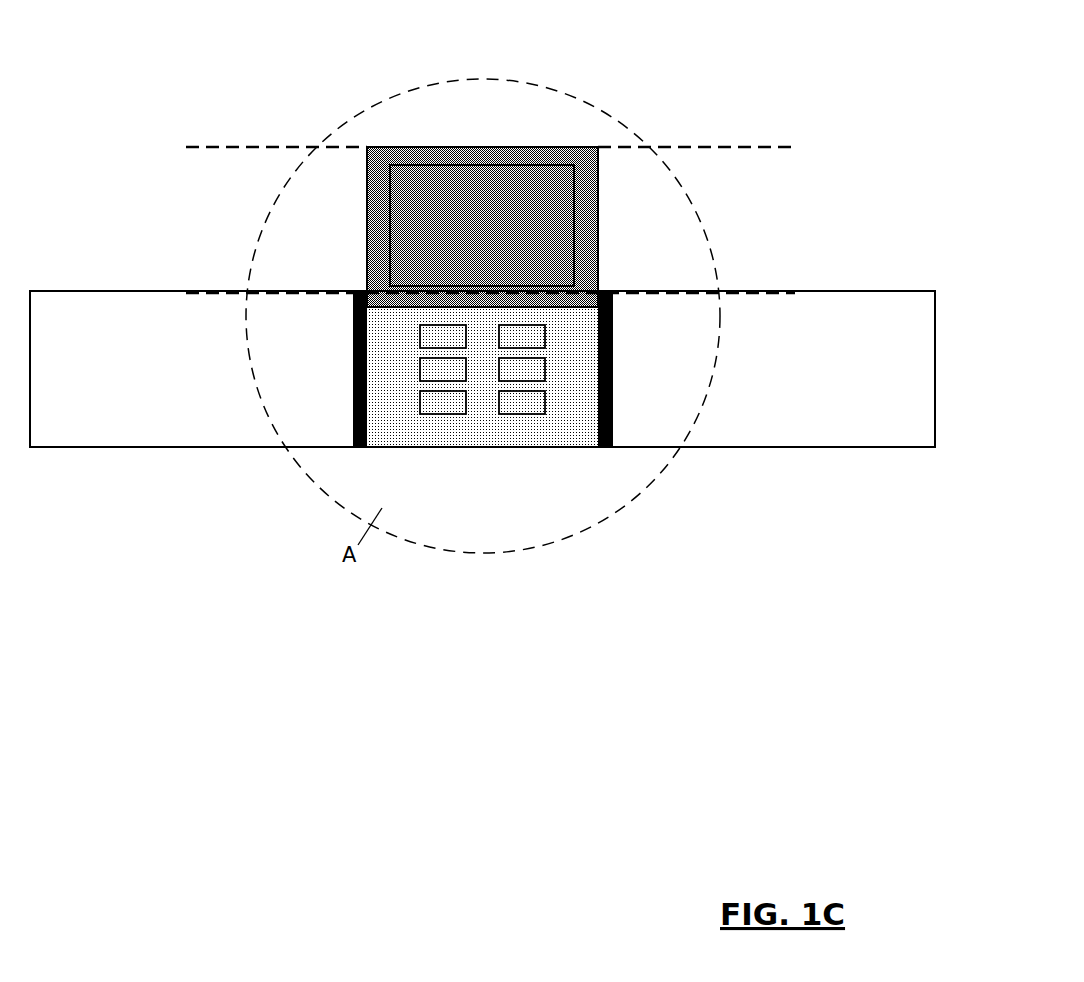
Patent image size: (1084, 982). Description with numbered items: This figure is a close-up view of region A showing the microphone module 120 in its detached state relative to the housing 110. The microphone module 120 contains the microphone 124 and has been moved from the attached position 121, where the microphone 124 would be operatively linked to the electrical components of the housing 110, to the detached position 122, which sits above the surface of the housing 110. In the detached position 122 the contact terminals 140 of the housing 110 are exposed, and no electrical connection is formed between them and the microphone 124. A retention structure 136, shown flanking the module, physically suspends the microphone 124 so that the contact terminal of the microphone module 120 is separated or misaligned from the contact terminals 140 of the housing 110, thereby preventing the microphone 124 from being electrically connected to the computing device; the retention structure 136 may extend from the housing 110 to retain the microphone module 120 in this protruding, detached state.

The housing 110 is at (126, 323).
The microphone module 120 is at (610, 238).
The attached position 121 is at (490, 308).
The detached position 122 is at (490, 161).
The microphone 124 is at (458, 212).
The retention structure 136 is at (353, 413).
The contact terminal 140 is at (522, 402).